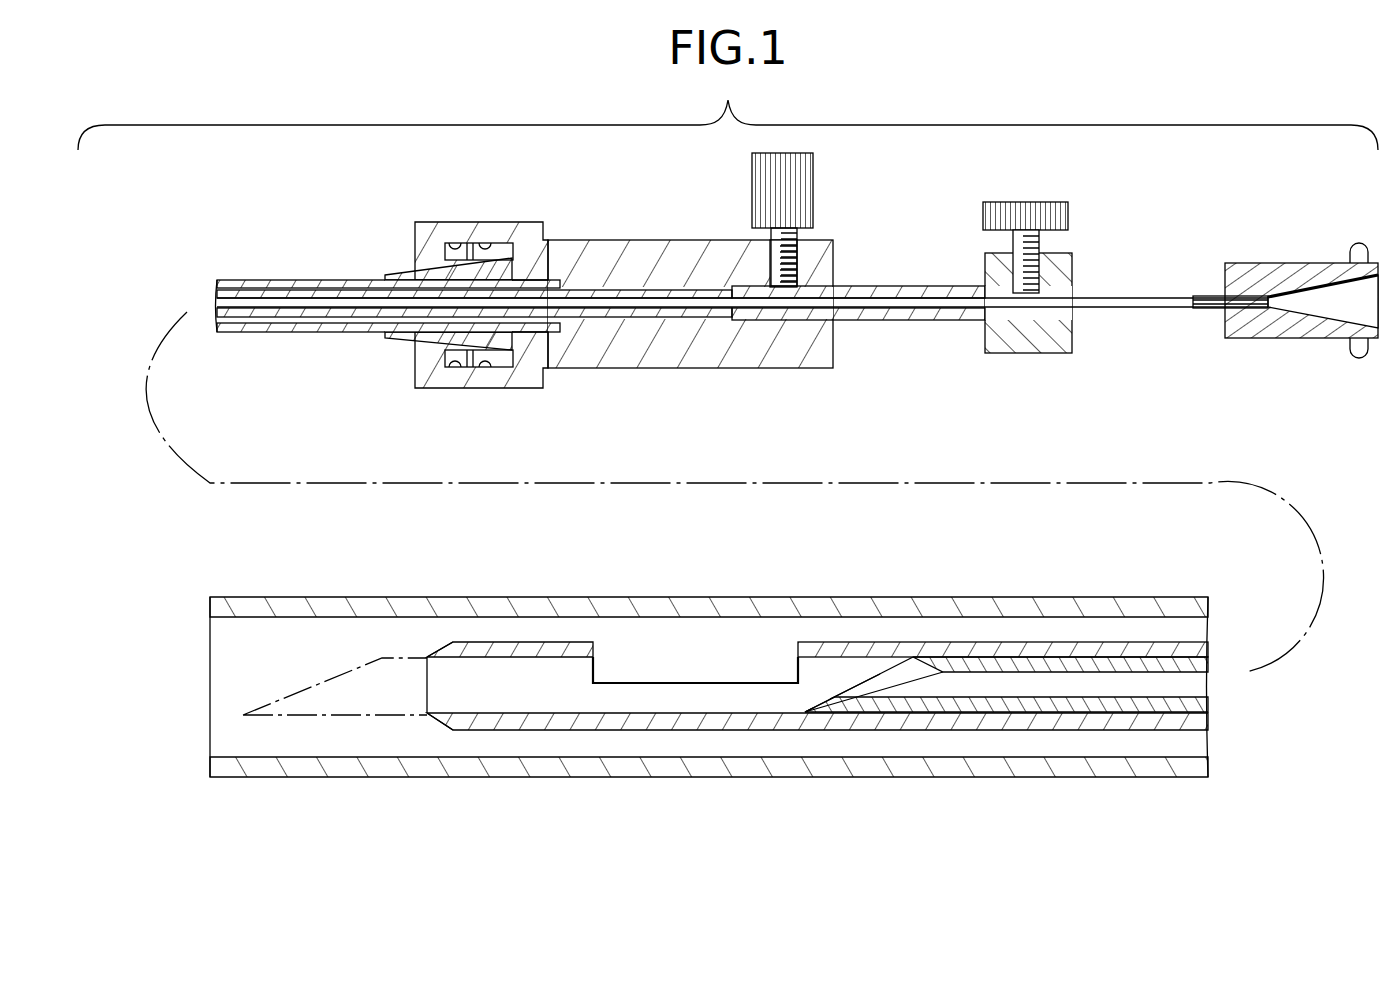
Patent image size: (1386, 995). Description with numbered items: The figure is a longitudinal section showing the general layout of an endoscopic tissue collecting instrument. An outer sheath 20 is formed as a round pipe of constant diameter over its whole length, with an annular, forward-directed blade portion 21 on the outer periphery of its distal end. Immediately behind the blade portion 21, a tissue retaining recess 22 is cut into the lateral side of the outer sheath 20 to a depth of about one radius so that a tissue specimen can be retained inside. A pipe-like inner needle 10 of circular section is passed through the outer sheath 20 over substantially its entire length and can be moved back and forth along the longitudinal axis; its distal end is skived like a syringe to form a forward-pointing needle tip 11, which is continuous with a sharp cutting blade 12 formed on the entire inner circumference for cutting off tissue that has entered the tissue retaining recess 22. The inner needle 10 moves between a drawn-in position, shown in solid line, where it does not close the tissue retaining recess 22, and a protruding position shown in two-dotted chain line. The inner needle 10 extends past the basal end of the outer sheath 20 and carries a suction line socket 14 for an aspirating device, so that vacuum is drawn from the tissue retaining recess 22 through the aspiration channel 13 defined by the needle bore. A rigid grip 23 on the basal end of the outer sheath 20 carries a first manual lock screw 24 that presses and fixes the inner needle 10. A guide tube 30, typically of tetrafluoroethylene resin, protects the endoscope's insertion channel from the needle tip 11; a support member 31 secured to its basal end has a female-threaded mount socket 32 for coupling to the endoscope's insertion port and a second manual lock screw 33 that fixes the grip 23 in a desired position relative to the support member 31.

The inner needle 10 is at (1118, 308).
The needle tip 11 is at (808, 710).
The cutting blade 12 is at (860, 693).
The aspiration channel 13 is at (1103, 683).
The suction line socket 14 is at (1248, 338).
The outer sheath 20 is at (280, 333).
The blade portion 21 is at (433, 714).
The tissue retaining recess 22 is at (690, 652).
The grip 23 is at (928, 320).
The first manual lock screw 24 is at (1068, 213).
The guide tube 30 is at (287, 280).
The support member 31 is at (626, 250).
The mount socket 32 is at (458, 240).
The second manual lock screw 33 is at (813, 176).